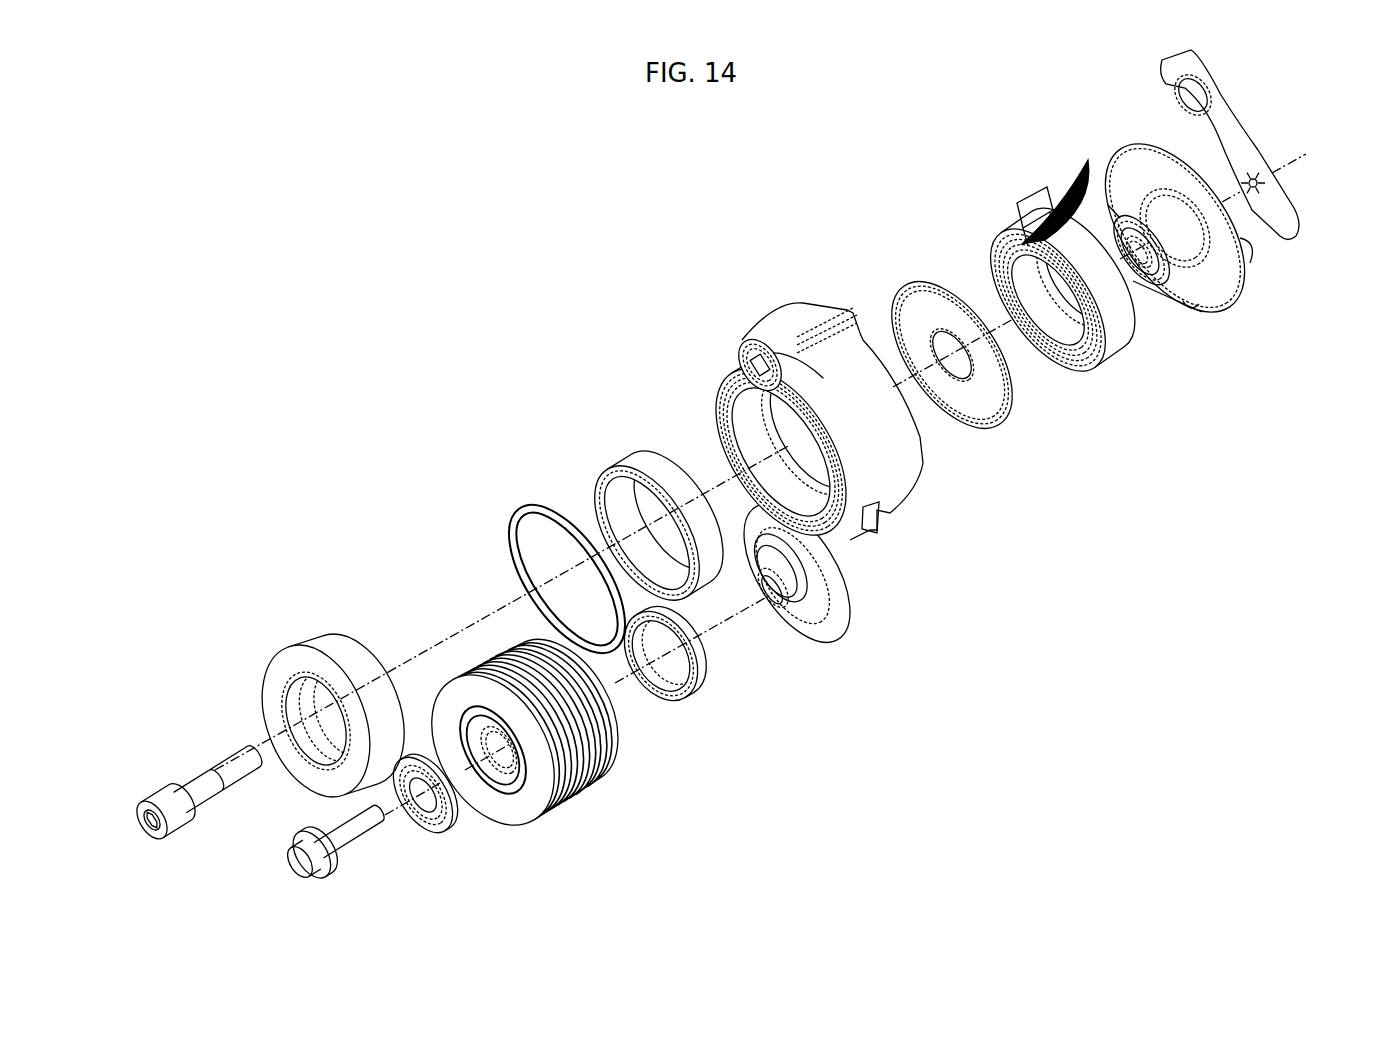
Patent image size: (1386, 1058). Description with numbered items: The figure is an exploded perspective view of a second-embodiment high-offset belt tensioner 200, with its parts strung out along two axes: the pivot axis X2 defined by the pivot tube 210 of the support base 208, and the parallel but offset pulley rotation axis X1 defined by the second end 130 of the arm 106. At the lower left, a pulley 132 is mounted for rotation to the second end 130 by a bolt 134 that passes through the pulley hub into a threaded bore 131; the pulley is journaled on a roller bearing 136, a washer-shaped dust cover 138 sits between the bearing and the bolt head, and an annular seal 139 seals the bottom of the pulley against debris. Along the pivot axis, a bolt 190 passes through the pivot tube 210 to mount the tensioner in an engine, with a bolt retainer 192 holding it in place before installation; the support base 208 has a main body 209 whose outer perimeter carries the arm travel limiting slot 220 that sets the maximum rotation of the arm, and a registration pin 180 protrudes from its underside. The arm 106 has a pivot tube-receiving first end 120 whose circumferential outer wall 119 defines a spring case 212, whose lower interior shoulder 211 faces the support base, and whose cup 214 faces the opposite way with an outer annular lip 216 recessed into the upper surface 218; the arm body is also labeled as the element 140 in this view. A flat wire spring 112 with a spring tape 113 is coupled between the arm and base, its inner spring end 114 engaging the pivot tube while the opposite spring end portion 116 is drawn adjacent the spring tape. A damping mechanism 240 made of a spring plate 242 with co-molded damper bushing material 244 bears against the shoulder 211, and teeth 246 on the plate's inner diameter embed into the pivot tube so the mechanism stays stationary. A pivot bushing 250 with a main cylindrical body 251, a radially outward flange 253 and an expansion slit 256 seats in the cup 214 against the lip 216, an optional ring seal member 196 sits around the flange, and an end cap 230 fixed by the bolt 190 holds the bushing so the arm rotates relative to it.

The high-offset belt tensioner 200 is at (592, 280).
The arm 106 is at (912, 462).
The flat wire spring 112 is at (1031, 274).
The spring tape 113 is at (1015, 200).
The inner spring end 114 is at (1043, 330).
The spring end 116 is at (1023, 193).
The circumferential outer wall 119 is at (880, 454).
The pivot tube-receiving first end 120 is at (880, 454).
The second end 130 is at (799, 597).
The threaded bore 131 is at (773, 607).
The pulley 132 is at (525, 744).
The bolt 134 is at (348, 855).
The roller bearing 136 is at (500, 785).
The dust cover 138 is at (447, 833).
The annular seal 139 is at (692, 698).
The housing 140 is at (821, 473).
The registration pin 180 is at (1175, 267).
The bolt 190 is at (180, 783).
The bolt retainer 192 is at (1171, 64).
The ring seal member 196 is at (522, 512).
The support base 208 is at (1206, 225).
The main body 209 is at (1206, 258).
The pivot tube 210 is at (1208, 259).
The interior shoulder 211 is at (800, 470).
The spring case 212 is at (791, 408).
The cup 214 is at (759, 408).
The outer annular lip 216 is at (757, 442).
The upper surface 218 is at (759, 408).
The arm travel limiting slot 220 is at (1208, 259).
The end cap 230 is at (293, 638).
The damping mechanism 240 is at (967, 350).
The spring plate 242 is at (979, 372).
The damper bushing material 244 is at (979, 372).
The teeth 246 is at (950, 345).
The pivot bushing 250 is at (620, 504).
The main cylindrical body 251 is at (620, 525).
The flange 253 is at (620, 525).
The slit 256 is at (725, 578).
The pulley rotation axis X1 is at (708, 637).
The pivot axis X2 is at (470, 632).